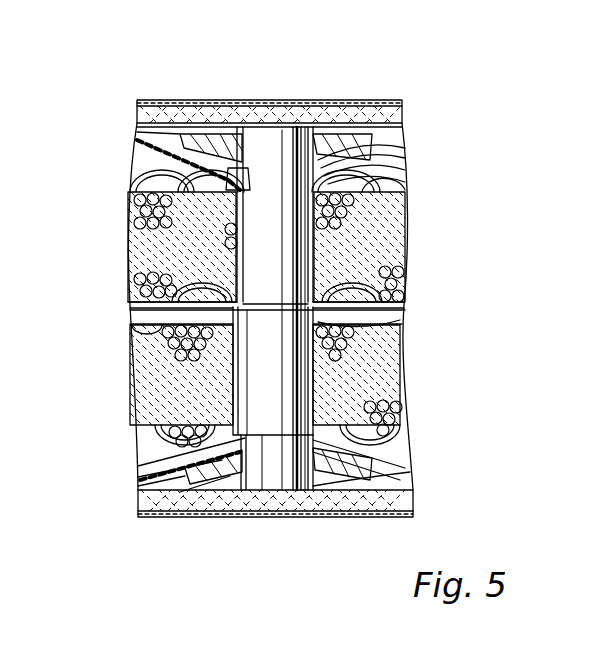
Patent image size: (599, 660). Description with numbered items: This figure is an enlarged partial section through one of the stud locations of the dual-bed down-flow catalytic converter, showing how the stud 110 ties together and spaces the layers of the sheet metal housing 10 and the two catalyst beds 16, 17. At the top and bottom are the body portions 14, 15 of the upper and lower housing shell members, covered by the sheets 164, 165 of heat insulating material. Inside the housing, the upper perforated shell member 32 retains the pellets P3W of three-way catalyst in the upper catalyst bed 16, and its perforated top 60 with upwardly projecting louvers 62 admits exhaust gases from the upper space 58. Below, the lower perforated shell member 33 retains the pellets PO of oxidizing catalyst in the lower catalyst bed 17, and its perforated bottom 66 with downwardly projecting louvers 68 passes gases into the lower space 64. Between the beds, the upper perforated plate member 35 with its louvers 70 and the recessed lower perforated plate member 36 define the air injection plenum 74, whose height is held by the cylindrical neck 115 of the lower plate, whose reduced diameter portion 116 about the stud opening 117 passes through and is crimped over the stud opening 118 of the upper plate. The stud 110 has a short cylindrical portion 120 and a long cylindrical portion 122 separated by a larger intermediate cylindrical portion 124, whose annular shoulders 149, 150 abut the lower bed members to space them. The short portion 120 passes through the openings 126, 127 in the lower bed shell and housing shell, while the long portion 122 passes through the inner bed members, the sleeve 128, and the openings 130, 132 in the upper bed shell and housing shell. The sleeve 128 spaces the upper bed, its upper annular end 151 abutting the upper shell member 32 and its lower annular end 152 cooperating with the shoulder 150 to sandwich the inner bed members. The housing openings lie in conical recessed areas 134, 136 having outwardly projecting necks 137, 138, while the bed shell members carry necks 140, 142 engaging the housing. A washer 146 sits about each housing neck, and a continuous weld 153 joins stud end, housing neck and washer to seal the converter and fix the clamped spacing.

The sheet metal housing 10 is at (398, 135).
The body portion 14 is at (148, 163).
The body portion 15 is at (140, 464).
The catalyst bed 16 is at (416, 176).
The catalyst bed 17 is at (410, 416).
The upper perforated shell member 32 is at (128, 182).
The lower perforated shell member 33 is at (135, 425).
The upper perforated plate member 35 is at (128, 302).
The lower perforated plate member 36 is at (130, 334).
The upper space 58 is at (132, 165).
The perforated top 60 is at (408, 204).
The louvers 62 is at (410, 166).
The lower space 64 is at (148, 447).
The perforated bottom 66 is at (405, 427).
The louvers 68 is at (400, 444).
The louvers 70 is at (182, 247).
The plenum 74 is at (145, 318).
The stud 110 is at (225, 380).
The cylindrical neck 115 is at (400, 316).
The reduced diameter portion 116 is at (242, 312).
The stud opening 117 is at (275, 281).
The stud opening 118 is at (288, 298).
The short cylindrical portion 120 is at (285, 492).
The long cylindrical portion 122 is at (288, 248).
The intermediate cylindrical portion 124 is at (230, 403).
The opening 126 is at (278, 492).
The opening 127 is at (262, 492).
The sleeve 128 is at (400, 257).
The opening 130 is at (278, 214).
The opening 132 is at (246, 152).
The conical recessed area 134 is at (143, 485).
The conical recessed area 136 is at (166, 147).
The neck 137 is at (241, 492).
The neck 138 is at (330, 165).
The neck 140 is at (407, 153).
The neck 142 is at (325, 398).
The washer 146 is at (234, 150).
The annular shoulder 149 is at (322, 426).
The annular shoulder 150 is at (302, 290).
The upper annular end 151 is at (300, 160).
The lower annular end 152 is at (198, 300).
The continuous weld 153 is at (322, 147).
The sheet of heat insulating material 164 is at (183, 114).
The sheet of heat insulating material 165 is at (378, 507).
The pellets P3W is at (142, 232).
The pellets PO is at (393, 369).